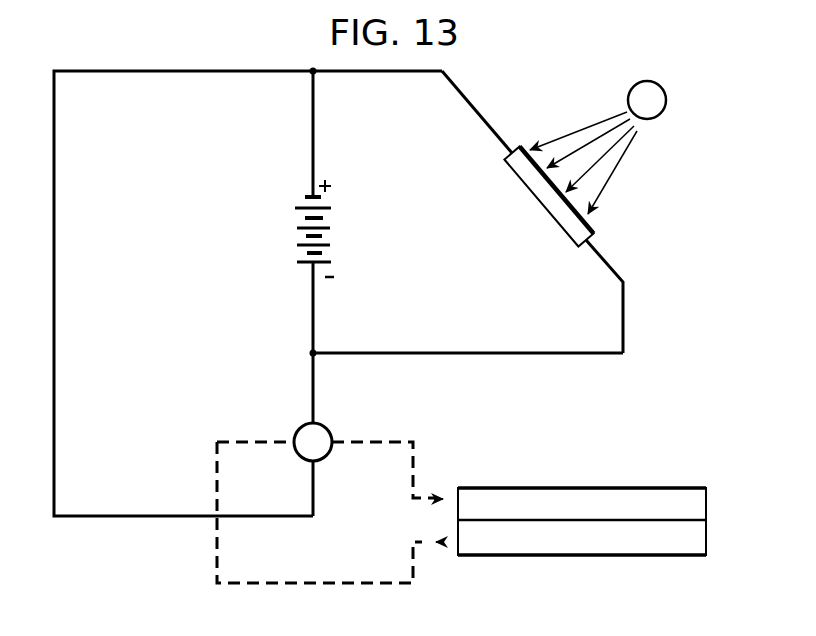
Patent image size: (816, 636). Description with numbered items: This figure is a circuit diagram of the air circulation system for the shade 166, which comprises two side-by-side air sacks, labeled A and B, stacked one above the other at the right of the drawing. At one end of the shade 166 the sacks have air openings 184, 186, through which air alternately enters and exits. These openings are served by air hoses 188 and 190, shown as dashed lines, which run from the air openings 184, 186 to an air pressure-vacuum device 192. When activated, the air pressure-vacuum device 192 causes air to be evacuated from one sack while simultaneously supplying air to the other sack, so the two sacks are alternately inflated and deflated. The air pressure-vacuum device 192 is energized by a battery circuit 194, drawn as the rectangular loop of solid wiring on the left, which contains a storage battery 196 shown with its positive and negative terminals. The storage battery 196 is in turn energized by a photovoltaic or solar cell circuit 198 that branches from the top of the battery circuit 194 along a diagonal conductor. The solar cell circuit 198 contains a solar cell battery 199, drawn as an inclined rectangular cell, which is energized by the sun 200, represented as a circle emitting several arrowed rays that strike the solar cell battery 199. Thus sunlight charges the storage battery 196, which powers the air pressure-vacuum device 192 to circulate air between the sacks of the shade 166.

The shade 166 is at (640, 484).
The air opening 184 is at (458, 498).
The air opening 186 is at (458, 540).
The air hose 188 is at (405, 440).
The air hose 190 is at (414, 582).
The air pressure-vacuum device 192 is at (299, 426).
The battery circuit 194 is at (56, 303).
The storage battery 196 is at (303, 243).
The solar cell circuit 198 is at (485, 115).
The solar cell battery 199 is at (553, 207).
The sun 200 is at (666, 104).